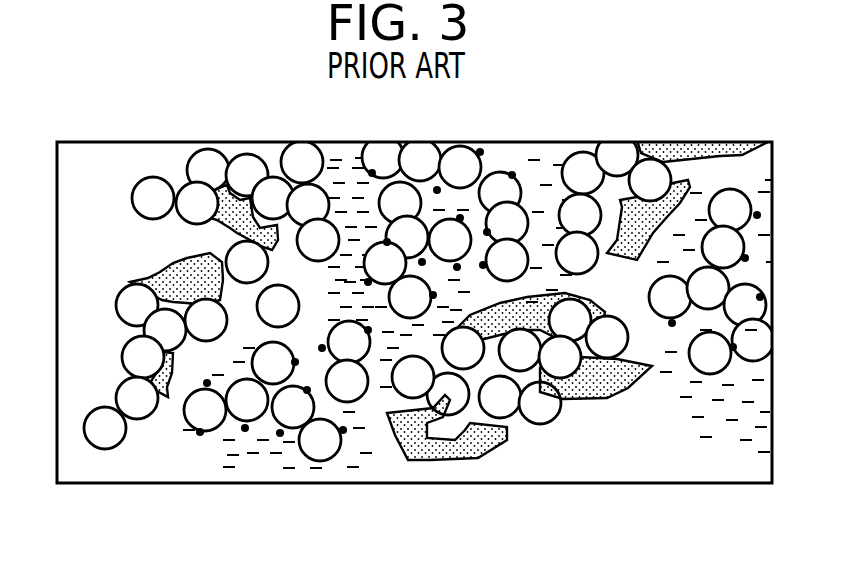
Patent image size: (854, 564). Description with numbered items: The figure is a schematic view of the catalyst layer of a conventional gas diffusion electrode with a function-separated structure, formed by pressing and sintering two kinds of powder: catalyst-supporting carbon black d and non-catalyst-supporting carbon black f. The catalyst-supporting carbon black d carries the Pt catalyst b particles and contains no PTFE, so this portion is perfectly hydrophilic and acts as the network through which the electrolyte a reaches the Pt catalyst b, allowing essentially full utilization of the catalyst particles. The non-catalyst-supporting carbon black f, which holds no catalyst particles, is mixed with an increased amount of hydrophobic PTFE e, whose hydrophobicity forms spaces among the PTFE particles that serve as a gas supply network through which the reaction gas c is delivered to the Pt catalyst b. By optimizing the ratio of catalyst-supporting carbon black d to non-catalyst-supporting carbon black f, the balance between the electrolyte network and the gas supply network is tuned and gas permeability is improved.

The electrolyte a is at (730, 400).
The Pt catalyst b is at (200, 432).
The reaction gas c is at (513, 463).
The catalyst-supporting carbon black d is at (262, 422).
The hydrophobic PTFE e is at (427, 460).
The non-catalyst-supporting carbon black f is at (545, 412).